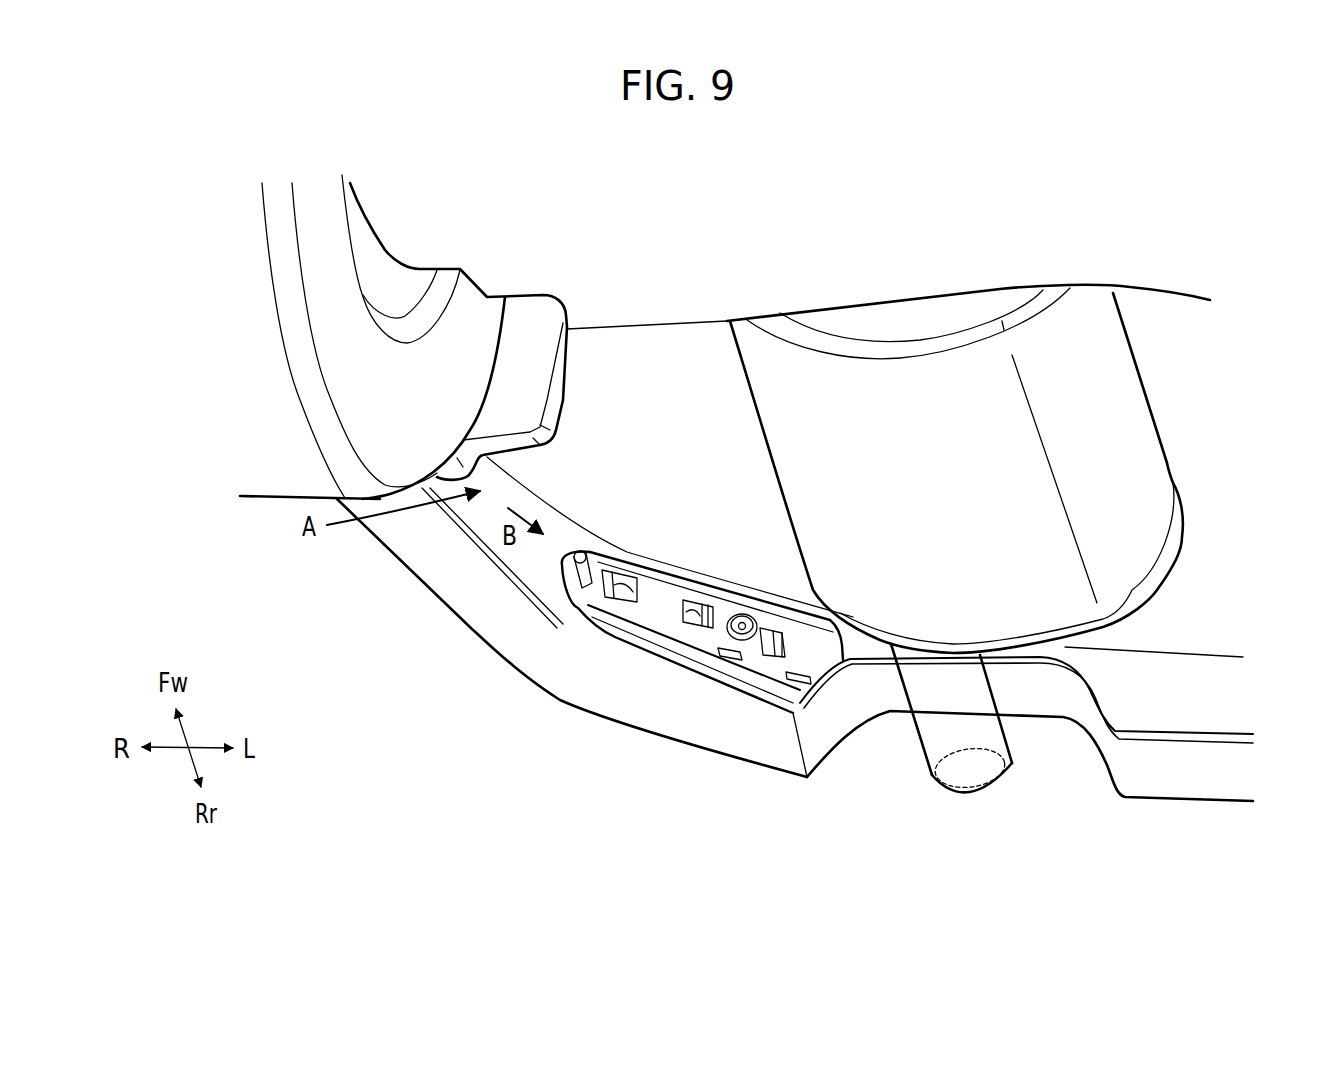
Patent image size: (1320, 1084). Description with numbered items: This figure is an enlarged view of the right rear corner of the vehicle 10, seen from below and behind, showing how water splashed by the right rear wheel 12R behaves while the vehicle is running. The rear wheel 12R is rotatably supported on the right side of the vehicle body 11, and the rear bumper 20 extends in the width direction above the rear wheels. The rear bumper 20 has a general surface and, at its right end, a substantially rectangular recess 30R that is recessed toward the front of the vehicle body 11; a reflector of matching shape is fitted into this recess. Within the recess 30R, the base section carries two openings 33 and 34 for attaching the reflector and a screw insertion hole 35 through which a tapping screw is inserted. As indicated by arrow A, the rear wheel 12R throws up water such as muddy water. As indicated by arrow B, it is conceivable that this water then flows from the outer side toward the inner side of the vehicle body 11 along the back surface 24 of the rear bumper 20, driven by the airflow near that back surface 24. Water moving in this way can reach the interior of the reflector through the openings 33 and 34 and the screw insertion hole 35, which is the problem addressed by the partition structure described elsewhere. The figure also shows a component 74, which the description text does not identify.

The vehicle 10 is at (153, 140).
The vehicle body 11 is at (569, 290).
The right rear wheel 12R is at (258, 501).
The rear bumper 20 is at (1176, 804).
The back surface 24 is at (1217, 703).
The recess 30R is at (570, 618).
The opening 33 is at (625, 602).
The opening 34 is at (687, 610).
The screw insertion hole 35 is at (745, 641).
The engine unit 74 is at (909, 314).